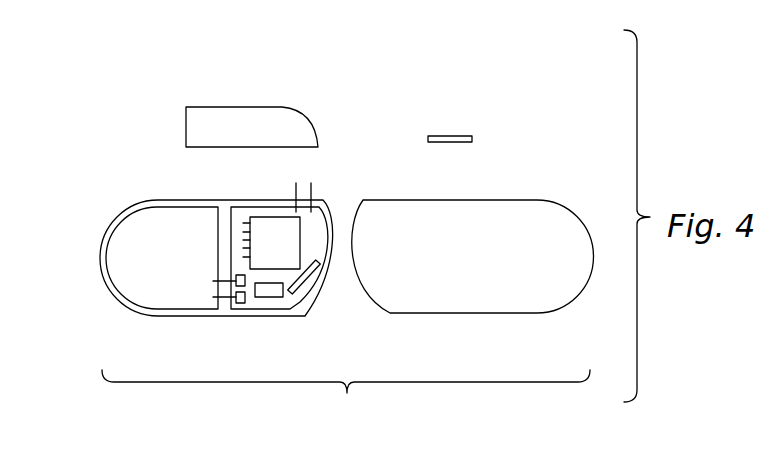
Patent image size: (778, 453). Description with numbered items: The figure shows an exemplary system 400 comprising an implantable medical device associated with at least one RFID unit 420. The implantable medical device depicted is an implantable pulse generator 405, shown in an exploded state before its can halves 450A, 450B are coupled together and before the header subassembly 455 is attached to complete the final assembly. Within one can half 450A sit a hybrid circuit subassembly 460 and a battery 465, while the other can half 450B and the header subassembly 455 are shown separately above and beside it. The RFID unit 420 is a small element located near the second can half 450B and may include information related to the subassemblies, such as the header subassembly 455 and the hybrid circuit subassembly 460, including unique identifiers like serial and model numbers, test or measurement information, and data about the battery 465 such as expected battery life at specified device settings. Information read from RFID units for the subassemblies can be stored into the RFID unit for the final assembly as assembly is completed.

The system 400 is at (498, 67).
The implantable pulse generator 405 is at (346, 397).
The RFID unit 420 is at (452, 135).
The can half 450A is at (120, 253).
The can half 450B is at (447, 199).
The header subassembly 455 is at (232, 107).
The hybrid circuit subassembly 460 is at (315, 218).
The battery 465 is at (162, 200).